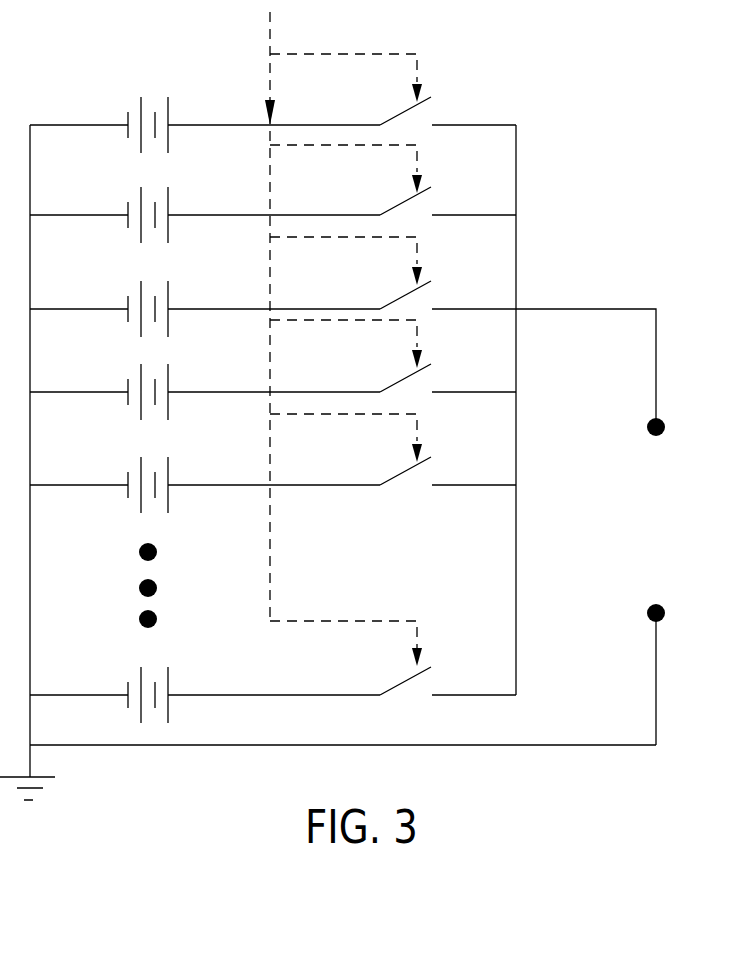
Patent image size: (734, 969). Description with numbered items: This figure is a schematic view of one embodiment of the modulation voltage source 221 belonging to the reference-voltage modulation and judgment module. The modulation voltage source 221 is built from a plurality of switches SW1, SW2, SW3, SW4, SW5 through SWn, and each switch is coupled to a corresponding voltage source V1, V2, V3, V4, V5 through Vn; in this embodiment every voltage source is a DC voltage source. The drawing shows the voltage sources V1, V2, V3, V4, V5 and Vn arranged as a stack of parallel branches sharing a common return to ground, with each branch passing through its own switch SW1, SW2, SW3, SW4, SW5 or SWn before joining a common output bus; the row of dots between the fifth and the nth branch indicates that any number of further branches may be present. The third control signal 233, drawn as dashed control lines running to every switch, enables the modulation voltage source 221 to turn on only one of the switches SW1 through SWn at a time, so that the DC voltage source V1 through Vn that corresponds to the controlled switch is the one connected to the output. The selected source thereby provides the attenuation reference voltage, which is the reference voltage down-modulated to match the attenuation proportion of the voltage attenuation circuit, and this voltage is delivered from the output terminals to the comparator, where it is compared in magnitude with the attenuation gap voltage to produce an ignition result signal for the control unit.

The modulation voltage source 221 is at (476, 378).
The third control signal 233 is at (268, 68).
The voltage source V1 is at (205, 112).
The voltage source V2 is at (205, 202).
The voltage source V3 is at (205, 296).
The voltage source V4 is at (205, 379).
The voltage source V5 is at (205, 472).
The voltage source Vn is at (205, 684).
The switch SW1 is at (439, 103).
The switch SW2 is at (439, 195).
The switch SW3 is at (396, 289).
The switch SW4 is at (438, 373).
The switch SW5 is at (438, 466).
The switch SWn is at (434, 677).